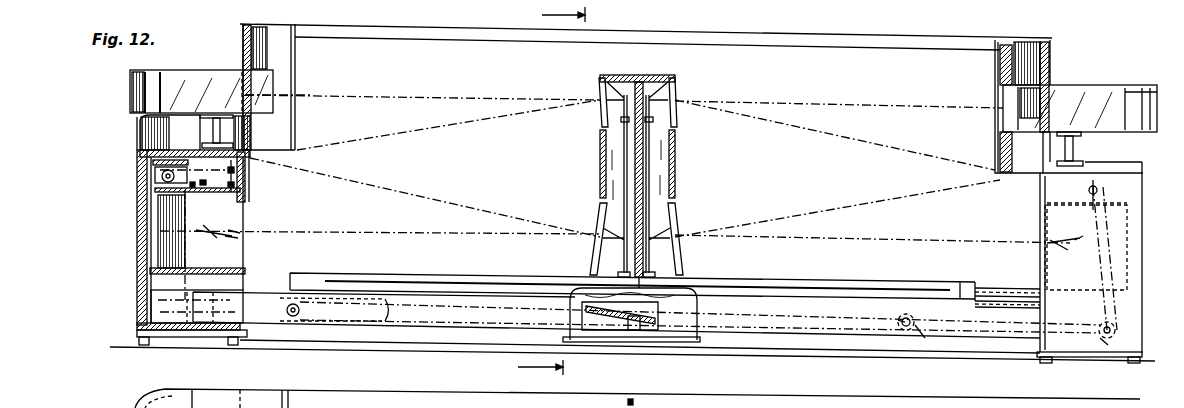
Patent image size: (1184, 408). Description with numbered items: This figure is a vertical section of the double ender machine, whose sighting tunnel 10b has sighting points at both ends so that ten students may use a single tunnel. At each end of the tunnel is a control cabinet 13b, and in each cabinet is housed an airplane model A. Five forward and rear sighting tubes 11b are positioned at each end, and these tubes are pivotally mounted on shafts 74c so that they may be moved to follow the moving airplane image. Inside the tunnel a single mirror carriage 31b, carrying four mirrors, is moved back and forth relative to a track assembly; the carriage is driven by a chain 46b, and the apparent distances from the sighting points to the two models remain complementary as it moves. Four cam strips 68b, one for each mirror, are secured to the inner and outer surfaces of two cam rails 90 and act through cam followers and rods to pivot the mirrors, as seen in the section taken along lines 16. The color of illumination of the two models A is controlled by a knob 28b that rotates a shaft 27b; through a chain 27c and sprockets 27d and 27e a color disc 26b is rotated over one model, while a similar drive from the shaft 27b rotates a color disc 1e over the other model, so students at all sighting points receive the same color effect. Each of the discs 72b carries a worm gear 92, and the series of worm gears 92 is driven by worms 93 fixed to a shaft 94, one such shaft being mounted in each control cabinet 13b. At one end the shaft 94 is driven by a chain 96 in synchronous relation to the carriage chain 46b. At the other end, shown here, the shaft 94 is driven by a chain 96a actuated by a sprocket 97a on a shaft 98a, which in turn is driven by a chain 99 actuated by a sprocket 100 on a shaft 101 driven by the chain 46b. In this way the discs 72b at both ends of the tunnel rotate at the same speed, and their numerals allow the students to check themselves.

The sighting tunnel 10b is at (745, 61).
The sighting tubes 11b is at (148, 88).
The control cabinet 13b is at (141, 233).
The section line 16 is at (564, 193).
The color disc 26b is at (160, 184).
The shaft 27b is at (250, 170).
The chain 27c is at (218, 192).
The sprocket 27d is at (252, 192).
The sprocket 27e is at (205, 192).
The knob 28b is at (232, 140).
The mirror carriage 31b is at (684, 180).
The chain 46b is at (450, 322).
The cam strips 68b is at (477, 268).
The shafts 74c is at (225, 133).
The cam rails 90 is at (371, 273).
The worm gear 92 is at (143, 150).
The worms 93 is at (205, 152).
The shaft 94 is at (196, 148).
The chain 96 is at (167, 252).
The chain 96a is at (1093, 258).
The sprocket 97a is at (1100, 343).
The shaft 98a is at (1100, 321).
The chain 99 is at (968, 334).
The sprocket 100 is at (927, 337).
The shaft 101 is at (904, 326).
The color disc 1e is at (1060, 203).
The airplane model A is at (247, 226).
The discs 72b is at (1118, 405).